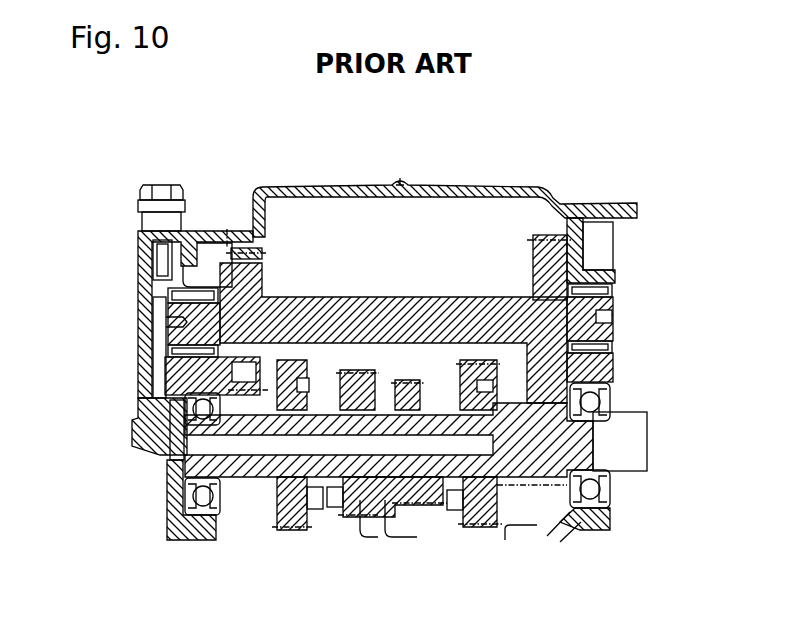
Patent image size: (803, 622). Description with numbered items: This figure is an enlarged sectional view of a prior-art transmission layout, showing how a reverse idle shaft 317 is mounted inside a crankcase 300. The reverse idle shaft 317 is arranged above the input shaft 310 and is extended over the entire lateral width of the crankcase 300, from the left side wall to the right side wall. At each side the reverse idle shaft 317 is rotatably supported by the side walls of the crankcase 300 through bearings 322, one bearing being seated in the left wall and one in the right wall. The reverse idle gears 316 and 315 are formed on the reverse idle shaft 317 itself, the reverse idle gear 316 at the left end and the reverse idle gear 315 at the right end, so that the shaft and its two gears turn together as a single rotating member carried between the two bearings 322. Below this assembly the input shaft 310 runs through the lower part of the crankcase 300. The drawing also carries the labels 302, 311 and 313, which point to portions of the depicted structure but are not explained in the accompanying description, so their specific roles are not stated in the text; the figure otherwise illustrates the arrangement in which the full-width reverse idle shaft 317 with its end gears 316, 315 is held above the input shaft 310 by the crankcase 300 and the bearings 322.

The crankcase 300 is at (338, 186).
The internal chamber 302 is at (426, 231).
The input shaft 310 is at (573, 453).
The bearing support 311 is at (533, 494).
The bolt 313 is at (229, 228).
The reverse idle gear 315 is at (533, 240).
The reverse idle gear 316 is at (250, 256).
The reverse idle shaft 317 is at (362, 302).
The bearings 322 is at (163, 277).